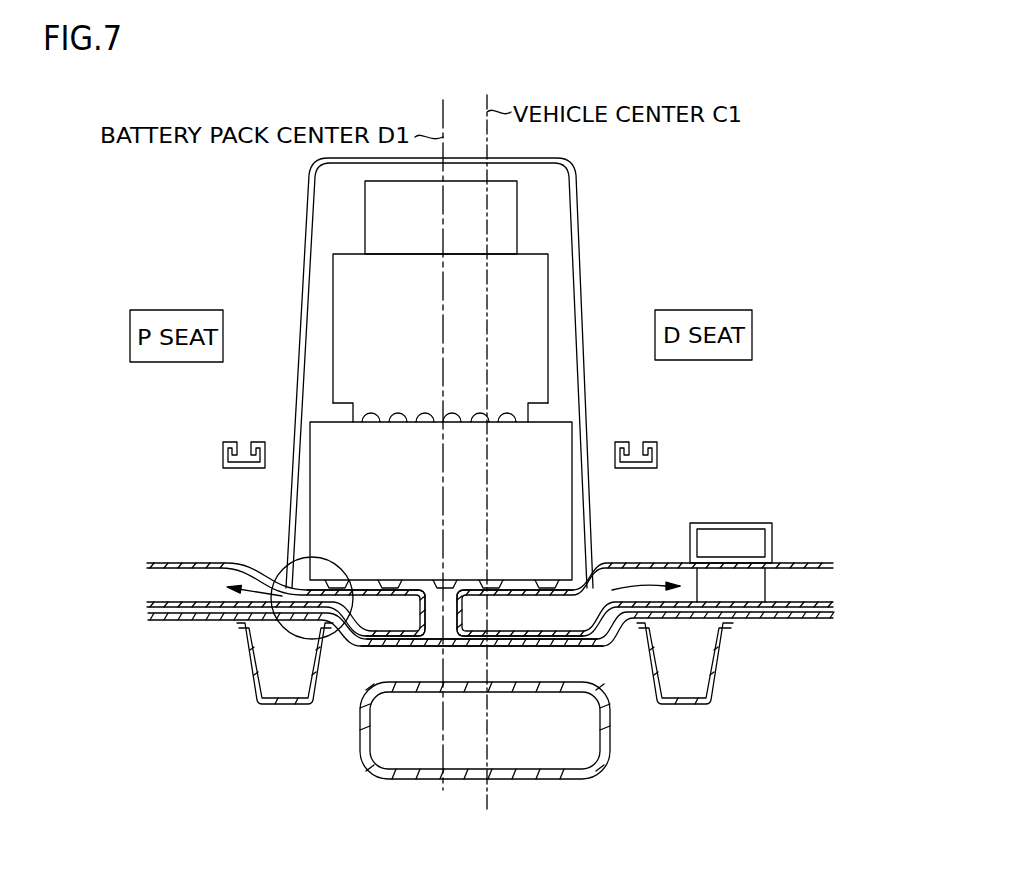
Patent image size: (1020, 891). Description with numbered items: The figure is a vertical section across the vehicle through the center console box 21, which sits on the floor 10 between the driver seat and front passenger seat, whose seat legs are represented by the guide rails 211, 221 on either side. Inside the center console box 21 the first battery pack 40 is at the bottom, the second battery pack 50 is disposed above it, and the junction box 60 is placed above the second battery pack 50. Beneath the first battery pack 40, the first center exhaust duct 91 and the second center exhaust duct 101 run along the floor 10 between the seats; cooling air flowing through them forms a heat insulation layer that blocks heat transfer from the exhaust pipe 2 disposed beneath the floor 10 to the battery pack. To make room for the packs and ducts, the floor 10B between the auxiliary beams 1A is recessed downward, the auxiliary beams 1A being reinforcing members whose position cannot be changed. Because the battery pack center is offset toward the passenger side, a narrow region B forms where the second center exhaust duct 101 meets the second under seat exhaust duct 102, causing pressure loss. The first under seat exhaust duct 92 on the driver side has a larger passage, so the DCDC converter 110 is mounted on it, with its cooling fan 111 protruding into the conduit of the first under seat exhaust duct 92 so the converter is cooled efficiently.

The center console box 21 is at (570, 171).
The junction box 60 is at (503, 216).
The second battery pack 50 is at (537, 287).
The first battery pack 40 is at (552, 444).
The guide rail 221 is at (230, 442).
The guide rail 211 is at (650, 442).
The second under seat exhaust duct 102 is at (183, 563).
The second center exhaust duct 101 is at (400, 636).
The narrow region B is at (278, 570).
The first under seat exhaust duct 92 is at (643, 563).
The first center exhaust duct 91 is at (563, 636).
The DCDC converter 110 is at (740, 523).
The cooling fan 111 is at (750, 585).
The floor 10 is at (778, 618).
The floor between auxiliary beams 10B is at (612, 647).
The auxiliary beam 1A is at (280, 704).
The exhaust pipe 2 is at (527, 779).